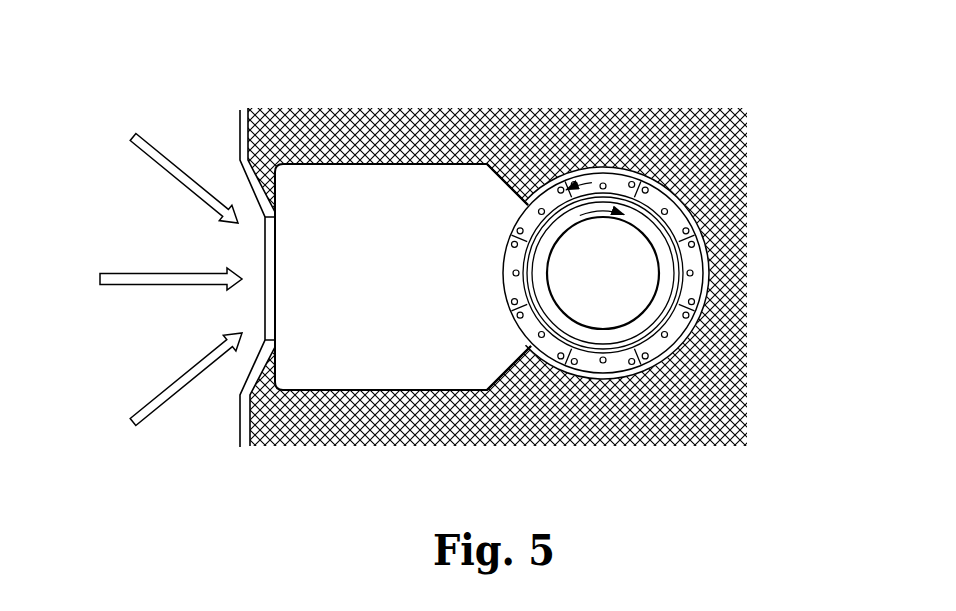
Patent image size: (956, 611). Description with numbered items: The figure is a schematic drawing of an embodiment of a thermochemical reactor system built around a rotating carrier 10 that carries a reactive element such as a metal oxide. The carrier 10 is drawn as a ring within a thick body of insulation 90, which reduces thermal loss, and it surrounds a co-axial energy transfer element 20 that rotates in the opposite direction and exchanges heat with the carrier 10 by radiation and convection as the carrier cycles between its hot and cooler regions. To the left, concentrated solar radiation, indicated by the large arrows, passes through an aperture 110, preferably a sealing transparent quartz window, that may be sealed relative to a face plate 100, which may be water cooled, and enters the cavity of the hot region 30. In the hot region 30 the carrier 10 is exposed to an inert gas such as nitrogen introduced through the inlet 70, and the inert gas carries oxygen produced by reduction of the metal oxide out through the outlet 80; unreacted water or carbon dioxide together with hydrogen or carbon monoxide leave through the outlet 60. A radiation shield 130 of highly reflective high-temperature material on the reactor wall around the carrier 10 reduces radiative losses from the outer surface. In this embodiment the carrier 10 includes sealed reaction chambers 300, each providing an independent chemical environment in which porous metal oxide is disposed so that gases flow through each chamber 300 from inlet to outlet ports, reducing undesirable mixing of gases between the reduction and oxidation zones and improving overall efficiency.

The carrier 10 is at (583, 365).
The energy transfer element 20 is at (640, 327).
The hot region 30 is at (353, 365).
The outlet 60 is at (693, 273).
The inlet 70 is at (509, 262).
The outlet 80 is at (510, 307).
The insulation 90 is at (340, 137).
The face plate 100 is at (255, 372).
The aperture 110 is at (270, 238).
The radiation shield 130 is at (617, 167).
The sealed reaction chamber 300 is at (676, 194).